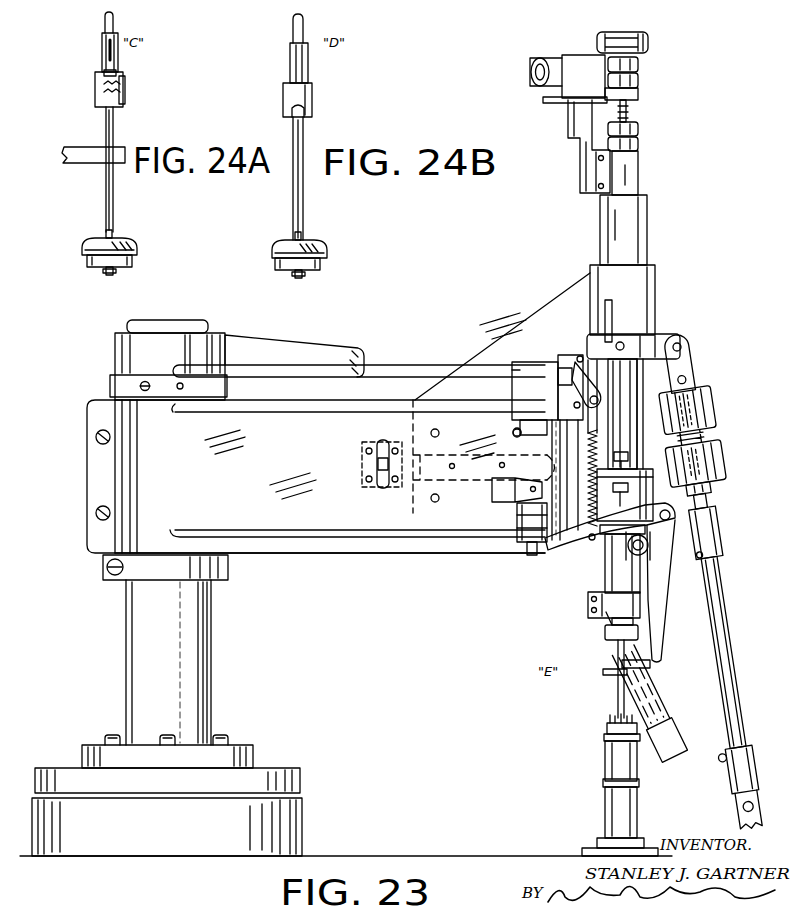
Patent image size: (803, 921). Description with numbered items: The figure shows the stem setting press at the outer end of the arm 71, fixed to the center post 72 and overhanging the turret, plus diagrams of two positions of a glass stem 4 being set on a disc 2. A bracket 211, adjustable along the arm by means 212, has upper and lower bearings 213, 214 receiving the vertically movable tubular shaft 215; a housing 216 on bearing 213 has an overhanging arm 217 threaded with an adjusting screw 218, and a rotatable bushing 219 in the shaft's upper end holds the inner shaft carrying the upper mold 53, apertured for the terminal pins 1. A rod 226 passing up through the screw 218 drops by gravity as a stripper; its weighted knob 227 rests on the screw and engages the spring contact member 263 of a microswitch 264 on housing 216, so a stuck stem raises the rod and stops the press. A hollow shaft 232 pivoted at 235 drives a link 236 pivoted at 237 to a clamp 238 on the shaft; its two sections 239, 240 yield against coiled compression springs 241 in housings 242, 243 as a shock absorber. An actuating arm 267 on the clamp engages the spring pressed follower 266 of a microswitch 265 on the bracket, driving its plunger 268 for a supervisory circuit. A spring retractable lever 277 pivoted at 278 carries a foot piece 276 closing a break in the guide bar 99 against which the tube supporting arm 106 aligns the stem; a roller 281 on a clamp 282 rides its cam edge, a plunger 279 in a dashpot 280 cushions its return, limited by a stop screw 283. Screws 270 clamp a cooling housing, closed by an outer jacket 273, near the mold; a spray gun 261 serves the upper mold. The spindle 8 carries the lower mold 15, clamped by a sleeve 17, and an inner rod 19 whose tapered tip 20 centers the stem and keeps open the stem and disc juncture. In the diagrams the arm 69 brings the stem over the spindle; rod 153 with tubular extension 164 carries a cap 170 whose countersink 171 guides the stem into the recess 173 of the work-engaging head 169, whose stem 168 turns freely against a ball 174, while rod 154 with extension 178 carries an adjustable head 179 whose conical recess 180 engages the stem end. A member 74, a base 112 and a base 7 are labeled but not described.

In FIG. 24A, the rod shank 153 is at (104, 21).
In FIG. 24A, the slot 164 is at (112, 40).
In FIG. 24A, the sleeve 174 is at (101, 45).
In FIG. 24A, the tube 168 is at (102, 63).
In FIG. 24A, the pin 169 is at (100, 81).
In FIG. 24A, the spring 173 is at (100, 94).
In FIG. 24A, the coupling block 170 is at (123, 82).
In FIG. 24A, the set screw 171 is at (124, 96).
In FIG. 24A, the plate 69 is at (81, 147).
In FIG. 24A, the rod 4 is at (113, 203).
In FIG. 24B, the rod 4 is at (293, 182).
In FIG. 23, the rod 4 is at (616, 694).
In FIG. 24A, the cap 15 is at (85, 246).
In FIG. 24B, the cap 15 is at (278, 246).
In FIG. 23, the cap 15 is at (603, 740).
In FIG. 24A, the nipple 20 is at (113, 236).
In FIG. 24B, the nipple 20 is at (301, 238).
In FIG. 24A, the head 2 is at (134, 244).
In FIG. 24B, the head 2 is at (323, 244).
In FIG. 23, the head 2 is at (606, 729).
In FIG. 24A, the stem 8 is at (106, 272).
In FIG. 24B, the stem 8 is at (295, 274).
In FIG. 23, the stem 8 is at (608, 810).
In FIG. 24A, the pin 19 is at (115, 273).
In FIG. 24B, the pin 19 is at (305, 274).
In FIG. 24B, the rod shank 154 is at (292, 30).
In FIG. 24B, the sleeve 178 is at (289, 57).
In FIG. 24B, the coupling block 179 is at (312, 96).
In FIG. 24B, the notch 180 is at (292, 112).
In FIG. 23, the valve body 263 is at (583, 56).
In FIG. 23, the knob 227 is at (650, 44).
In FIG. 23, the nut 218 is at (640, 68).
In FIG. 23, the plate 217 is at (640, 96).
In FIG. 23, the stem 226 is at (628, 115).
In FIG. 23, the nut 219 is at (640, 146).
In FIG. 23, the bracket 264 is at (562, 100).
In FIG. 23, the cylinder 216 is at (600, 238).
In FIG. 23, the cylinder head 213 is at (656, 273).
In FIG. 23, the pin 267 is at (590, 273).
In FIG. 23, the collar 238 is at (645, 334).
In FIG. 23, the pivot pin 237 is at (684, 345).
In FIG. 23, the link 239 is at (692, 366).
In FIG. 23, the housing face 265 is at (513, 367).
In FIG. 23, the plate 211 is at (478, 370).
In FIG. 23, the housing 268 is at (566, 392).
In FIG. 23, the lever 266 is at (606, 394).
In FIG. 23, the knob 242 is at (709, 408).
In FIG. 23, the shaft 241 is at (702, 442).
In FIG. 23, the screw 283 is at (626, 452).
In FIG. 23, the knob 243 is at (713, 468).
In FIG. 23, the piston rod 214 is at (650, 469).
In FIG. 23, the rod 240 is at (702, 512).
In FIG. 23, the lever 278 is at (676, 522).
In FIG. 23, the arm 74 is at (312, 345).
In FIG. 23, the clamp 212 is at (383, 488).
In FIG. 23, the arm housing 71 is at (290, 536).
In FIG. 23, the plunger 280 is at (516, 535).
In FIG. 23, the pin 279 is at (526, 550).
In FIG. 23, the cap 282 is at (612, 545).
In FIG. 23, the cylinder 215 is at (610, 572).
In FIG. 23, the roller 281 is at (648, 552).
In FIG. 23, the arm 277 is at (668, 565).
In FIG. 23, the bracket 270 is at (587, 602).
In FIG. 23, the screw 273 is at (606, 614).
In FIG. 23, the cap 53 is at (604, 634).
In FIG. 23, the arm 99 is at (656, 650).
In FIG. 23, the stop 276 is at (651, 665).
In FIG. 23, the weight 261 is at (682, 752).
In FIG. 23, the stop 106 is at (602, 672).
In FIG. 23, the teeth 1 is at (607, 717).
In FIG. 23, the cylinder 17 is at (604, 760).
In FIG. 23, the strut 236 is at (716, 752).
In FIG. 23, the pivot 235 is at (753, 808).
In FIG. 23, the foot 232 is at (751, 826).
In FIG. 23, the base 7 is at (565, 856).
In FIG. 23, the column 72 is at (124, 662).
In FIG. 23, the base 112 is at (292, 836).